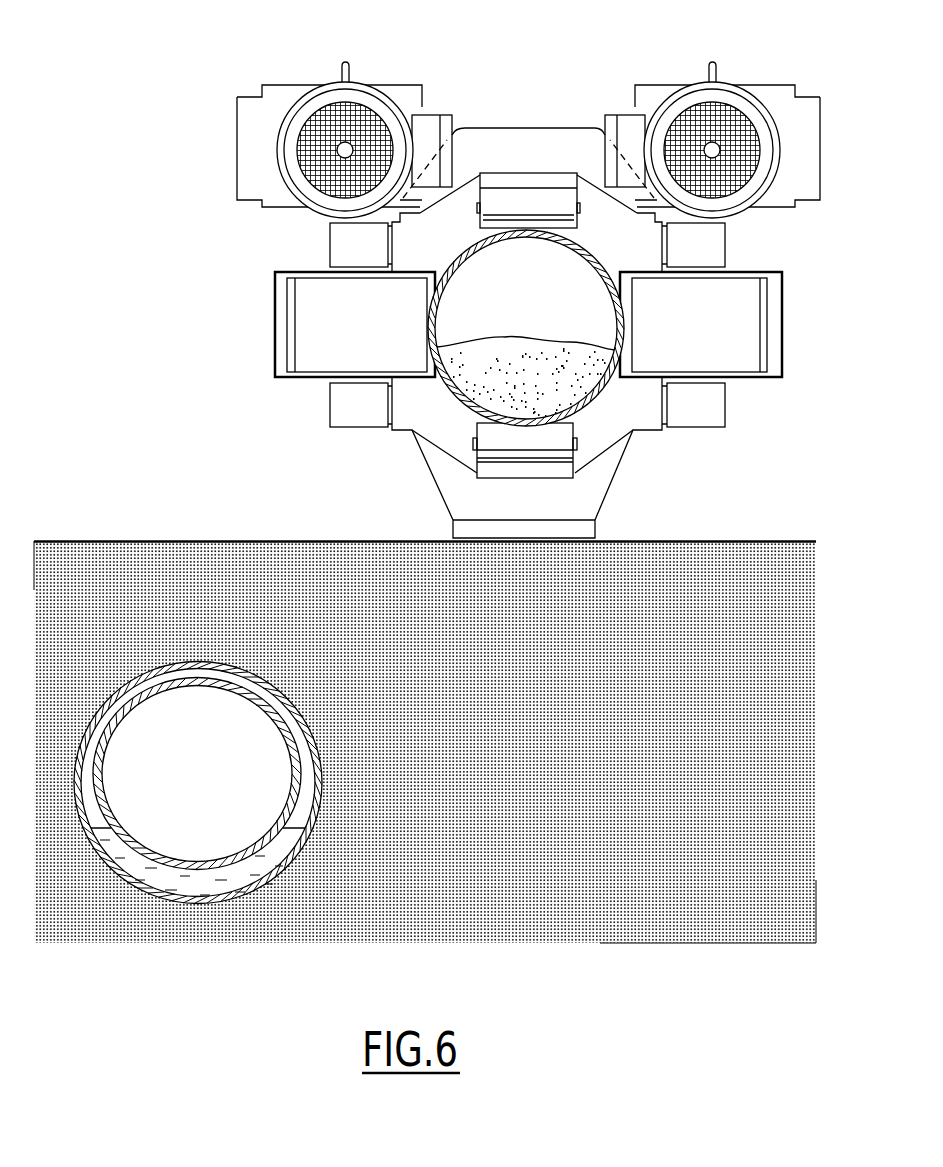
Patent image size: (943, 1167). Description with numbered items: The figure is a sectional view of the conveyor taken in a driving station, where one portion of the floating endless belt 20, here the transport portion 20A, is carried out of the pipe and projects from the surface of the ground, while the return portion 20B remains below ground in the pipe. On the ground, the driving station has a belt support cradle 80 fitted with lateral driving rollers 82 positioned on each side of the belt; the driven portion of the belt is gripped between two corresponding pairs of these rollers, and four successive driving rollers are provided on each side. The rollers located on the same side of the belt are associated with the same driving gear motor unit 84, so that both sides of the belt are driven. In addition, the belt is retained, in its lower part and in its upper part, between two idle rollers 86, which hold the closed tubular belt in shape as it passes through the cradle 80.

The floating endless belt 20 is at (571, 351).
The transport portion 20A is at (598, 403).
The return portion 20B is at (190, 866).
The belt support cradle 80 is at (620, 467).
The lateral driving rollers 82 is at (745, 327).
The driving gear motor unit 84 is at (741, 107).
The idle rollers 86 is at (490, 450).